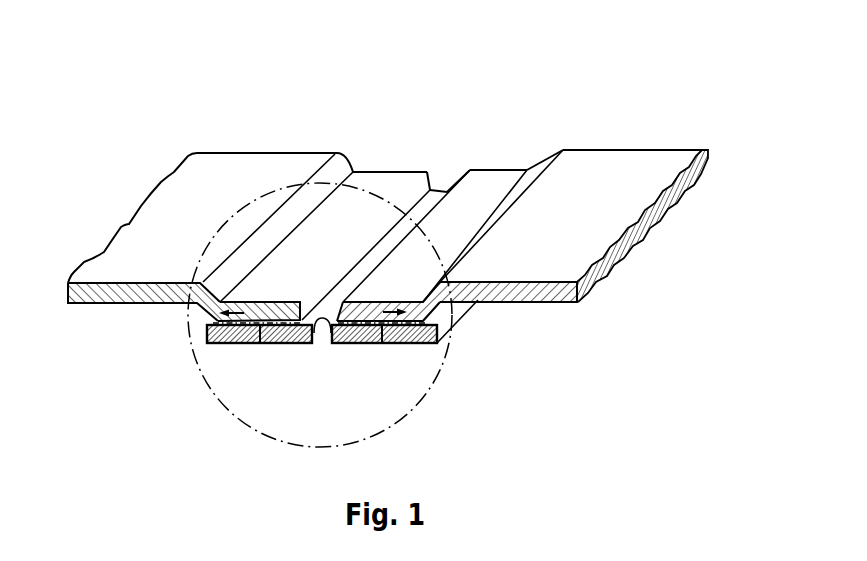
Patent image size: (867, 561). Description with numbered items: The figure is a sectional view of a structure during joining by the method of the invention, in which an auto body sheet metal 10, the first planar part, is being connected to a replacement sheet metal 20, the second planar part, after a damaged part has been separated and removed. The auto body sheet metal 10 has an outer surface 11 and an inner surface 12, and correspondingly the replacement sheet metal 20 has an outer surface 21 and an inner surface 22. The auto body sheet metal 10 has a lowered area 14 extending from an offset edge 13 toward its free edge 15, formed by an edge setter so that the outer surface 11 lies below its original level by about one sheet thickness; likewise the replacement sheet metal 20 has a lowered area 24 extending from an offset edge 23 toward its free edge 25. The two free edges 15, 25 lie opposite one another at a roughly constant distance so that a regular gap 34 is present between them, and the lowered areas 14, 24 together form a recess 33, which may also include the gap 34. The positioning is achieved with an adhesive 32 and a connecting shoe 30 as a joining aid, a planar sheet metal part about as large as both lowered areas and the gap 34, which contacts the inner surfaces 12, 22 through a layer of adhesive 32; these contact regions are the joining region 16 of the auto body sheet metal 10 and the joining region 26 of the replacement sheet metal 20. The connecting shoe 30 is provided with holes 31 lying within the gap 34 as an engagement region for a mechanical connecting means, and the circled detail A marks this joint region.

The auto body sheet metal 10 is at (122, 220).
The outer surface 11 is at (220, 182).
The inner surface 12 is at (97, 306).
The offset edge 13 is at (308, 168).
The lowered area 14 is at (378, 182).
The free edge 15 is at (427, 172).
The joining region 16 is at (214, 315).
The replacement sheet metal 20 is at (624, 255).
The outer surface 21 is at (608, 168).
The inner surface 22 is at (533, 301).
The offset edge 23 is at (527, 172).
The lowered area 24 is at (502, 183).
The free edge 25 is at (336, 343).
The joining region 26 is at (440, 337).
The connecting shoe 30 is at (384, 343).
The holes 31 is at (313, 343).
The adhesive 32 is at (260, 343).
The recess 33 is at (481, 185).
The gap 34 is at (350, 268).
The detail region A is at (203, 388).